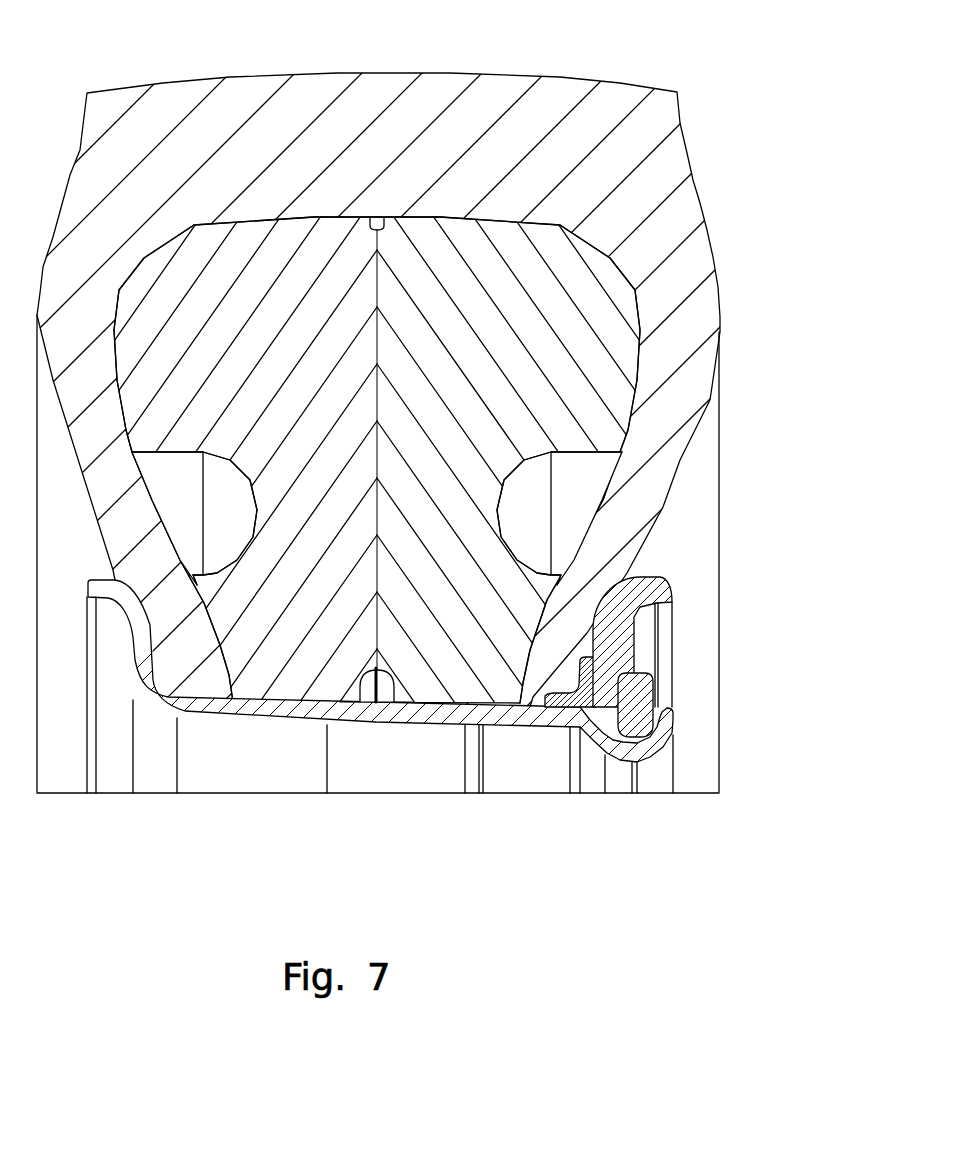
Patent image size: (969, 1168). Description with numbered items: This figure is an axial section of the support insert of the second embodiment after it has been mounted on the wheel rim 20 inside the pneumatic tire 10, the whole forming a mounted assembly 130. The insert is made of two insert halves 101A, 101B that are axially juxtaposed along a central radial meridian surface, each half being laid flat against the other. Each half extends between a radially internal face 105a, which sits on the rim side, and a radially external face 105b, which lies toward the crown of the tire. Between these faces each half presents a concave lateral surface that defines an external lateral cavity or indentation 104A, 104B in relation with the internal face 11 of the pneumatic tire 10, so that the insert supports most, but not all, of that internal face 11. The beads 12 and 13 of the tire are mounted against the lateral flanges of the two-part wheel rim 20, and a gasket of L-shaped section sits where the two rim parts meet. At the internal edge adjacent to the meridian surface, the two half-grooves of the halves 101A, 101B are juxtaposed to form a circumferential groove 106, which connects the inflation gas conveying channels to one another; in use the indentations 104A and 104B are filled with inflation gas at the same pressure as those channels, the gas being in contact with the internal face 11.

The pneumatic tire 10 is at (556, 76).
The radially external face 105b is at (437, 217).
The first insert half 101A is at (267, 372).
The second insert half 101B is at (506, 357).
The internal face 11 is at (150, 506).
The first external lateral cavity or indentation 104A is at (234, 524).
The second external lateral cavity or indentation 104B is at (534, 525).
The bead 12 is at (183, 678).
The wheel rim 20 is at (280, 722).
The mounted assembly 130 is at (231, 756).
The circumferential groove 106 is at (388, 684).
The radially internal face 105a is at (434, 702).
The bead 13 is at (532, 680).